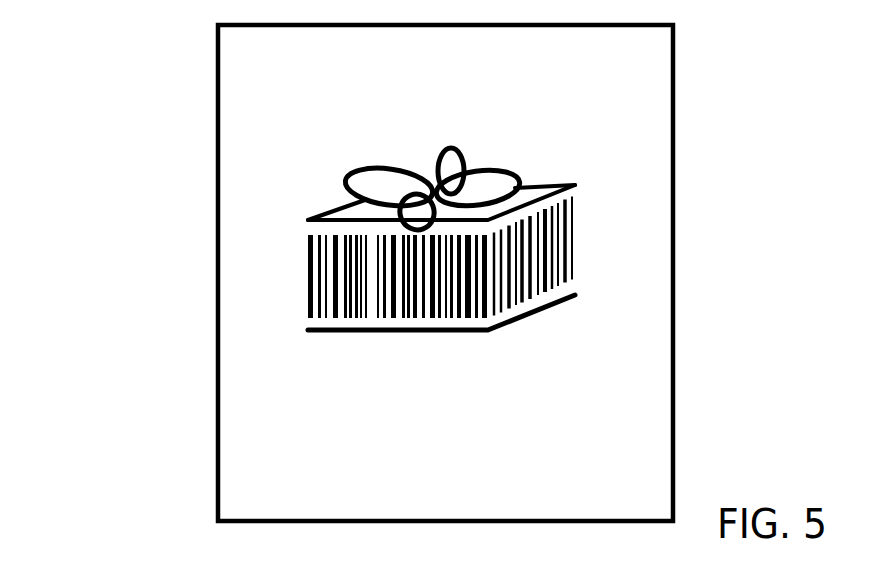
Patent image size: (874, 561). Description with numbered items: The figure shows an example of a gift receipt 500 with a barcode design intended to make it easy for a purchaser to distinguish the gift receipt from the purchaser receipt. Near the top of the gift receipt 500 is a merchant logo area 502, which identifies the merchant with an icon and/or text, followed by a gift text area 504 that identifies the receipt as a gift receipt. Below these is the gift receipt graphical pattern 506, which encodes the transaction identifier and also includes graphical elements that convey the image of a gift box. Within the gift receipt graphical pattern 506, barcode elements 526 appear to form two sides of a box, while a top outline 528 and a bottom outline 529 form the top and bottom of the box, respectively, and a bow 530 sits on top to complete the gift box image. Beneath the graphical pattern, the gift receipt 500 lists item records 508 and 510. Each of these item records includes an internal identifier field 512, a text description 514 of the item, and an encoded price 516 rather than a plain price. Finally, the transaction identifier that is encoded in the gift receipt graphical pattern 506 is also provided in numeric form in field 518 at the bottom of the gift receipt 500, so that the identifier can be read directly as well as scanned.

The gift receipt 500 is at (713, 72).
The merchant logo area 502 is at (360, 45).
The gift text area 504 is at (328, 95).
The gift receipt graphical pattern 506 is at (293, 277).
The item record 508 is at (262, 401).
The item record 510 is at (262, 440).
The internal identifier field 512 is at (445, 343).
The text description 514 is at (507, 379).
The encoded price 516 is at (607, 380).
The field 518 is at (262, 498).
The barcode elements 526 is at (572, 227).
The top outline 528 is at (577, 183).
The bottom outline 529 is at (573, 293).
The bow 530 is at (345, 182).